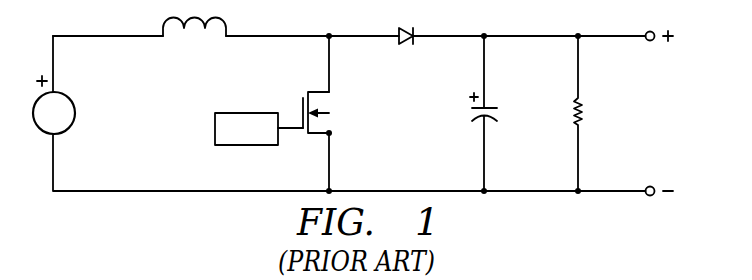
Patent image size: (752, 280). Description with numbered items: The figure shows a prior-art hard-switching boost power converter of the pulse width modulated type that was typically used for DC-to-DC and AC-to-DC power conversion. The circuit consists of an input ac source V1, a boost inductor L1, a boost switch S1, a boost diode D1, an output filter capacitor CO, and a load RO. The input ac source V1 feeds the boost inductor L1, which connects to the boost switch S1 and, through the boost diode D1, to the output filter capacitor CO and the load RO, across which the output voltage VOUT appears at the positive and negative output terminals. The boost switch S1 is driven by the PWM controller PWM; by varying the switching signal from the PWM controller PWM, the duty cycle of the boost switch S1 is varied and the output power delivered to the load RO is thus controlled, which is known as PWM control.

The input ac source V1 is at (65, 105).
The boost inductor L1 is at (194, 18).
The boost diode D1 is at (405, 37).
The boost switch S1 is at (365, 139).
The PWM controller PWM is at (259, 129).
The output filter capacitor CO is at (496, 113).
The load RO is at (593, 113).
The output voltage terminals VOUT is at (673, 113).